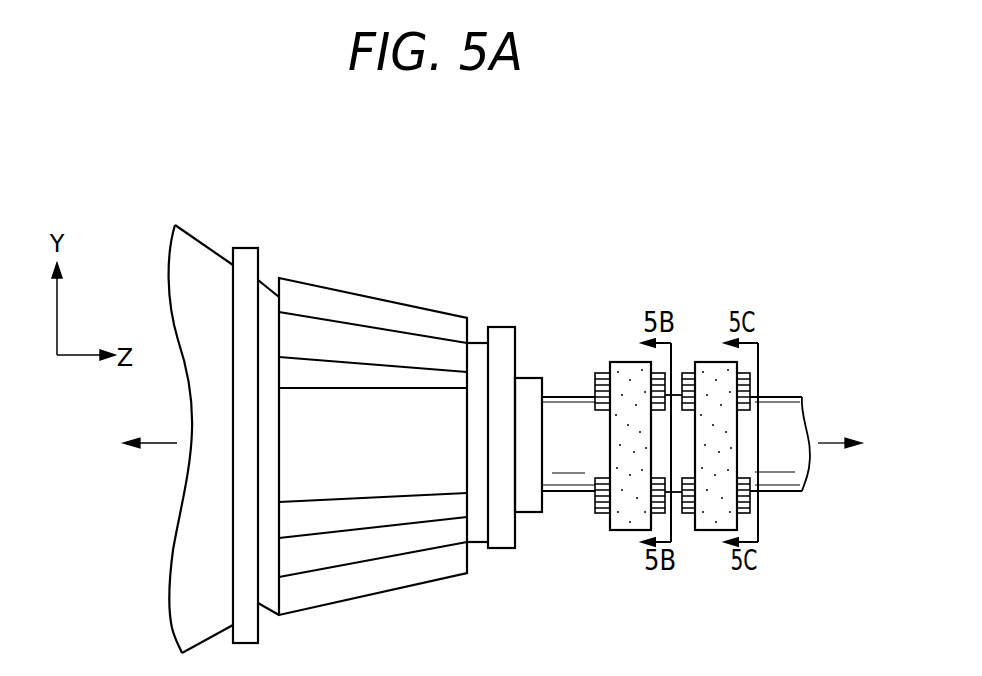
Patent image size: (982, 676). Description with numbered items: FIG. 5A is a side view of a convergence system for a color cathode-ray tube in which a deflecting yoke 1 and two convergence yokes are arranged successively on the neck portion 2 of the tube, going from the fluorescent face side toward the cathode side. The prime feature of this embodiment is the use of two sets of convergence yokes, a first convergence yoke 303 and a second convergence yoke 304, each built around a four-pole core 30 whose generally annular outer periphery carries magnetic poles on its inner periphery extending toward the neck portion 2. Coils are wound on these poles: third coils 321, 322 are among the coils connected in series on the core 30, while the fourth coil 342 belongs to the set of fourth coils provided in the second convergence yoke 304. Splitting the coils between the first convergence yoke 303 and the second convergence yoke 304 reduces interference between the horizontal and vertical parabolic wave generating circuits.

The deflecting yoke 1 is at (346, 288).
The neck portion 2 is at (558, 390).
The four-pole core 30 is at (608, 530).
The first convergence yoke 303 is at (614, 362).
The second convergence yoke 304 is at (707, 362).
The third coil 321 is at (660, 373).
The third coil 322 is at (652, 525).
The fourth coil 342 is at (750, 500).